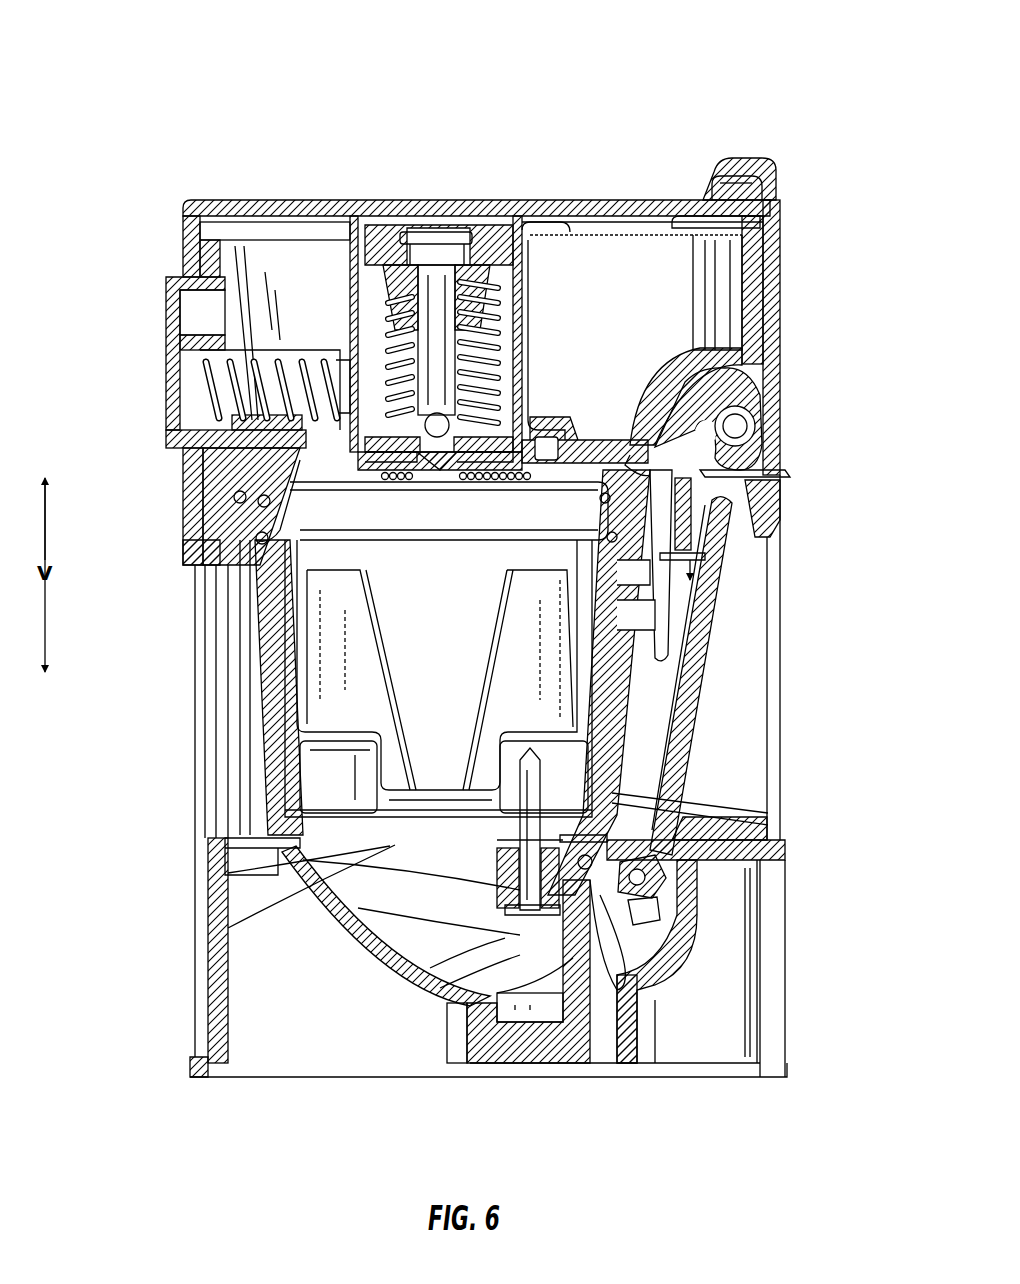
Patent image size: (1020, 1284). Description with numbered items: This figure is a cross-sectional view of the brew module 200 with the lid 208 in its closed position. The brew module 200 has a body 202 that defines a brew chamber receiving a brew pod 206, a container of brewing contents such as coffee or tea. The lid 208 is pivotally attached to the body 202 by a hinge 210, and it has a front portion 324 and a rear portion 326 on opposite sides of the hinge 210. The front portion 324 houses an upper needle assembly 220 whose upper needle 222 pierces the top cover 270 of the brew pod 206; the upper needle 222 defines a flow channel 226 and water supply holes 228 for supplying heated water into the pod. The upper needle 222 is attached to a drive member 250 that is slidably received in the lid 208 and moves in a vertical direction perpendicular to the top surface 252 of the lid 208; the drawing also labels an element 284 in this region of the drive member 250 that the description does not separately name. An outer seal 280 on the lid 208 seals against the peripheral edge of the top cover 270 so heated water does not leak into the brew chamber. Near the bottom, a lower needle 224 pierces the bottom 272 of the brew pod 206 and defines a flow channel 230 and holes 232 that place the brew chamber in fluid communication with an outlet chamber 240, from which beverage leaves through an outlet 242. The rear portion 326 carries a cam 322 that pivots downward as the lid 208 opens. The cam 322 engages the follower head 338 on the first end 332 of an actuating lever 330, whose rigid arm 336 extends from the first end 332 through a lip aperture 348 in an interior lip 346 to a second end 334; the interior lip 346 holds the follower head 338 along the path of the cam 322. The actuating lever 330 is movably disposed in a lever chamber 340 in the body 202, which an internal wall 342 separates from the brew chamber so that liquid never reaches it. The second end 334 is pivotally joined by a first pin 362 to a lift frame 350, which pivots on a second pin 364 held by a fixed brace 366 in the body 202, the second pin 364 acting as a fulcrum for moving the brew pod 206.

The brew module 200 is at (792, 100).
The body 202 is at (218, 998).
The brew pod 206 is at (454, 622).
The lid 208 is at (192, 212).
The hinge 210 is at (737, 428).
The upper needle assembly 220 is at (588, 305).
The upper needle 222 is at (558, 305).
The lower needle 224 is at (395, 866).
The flow channel 226 is at (439, 280).
The water supply holes 228 is at (528, 392).
The flow channel 230 is at (532, 900).
The holes 232 is at (518, 812).
The outlet chamber 240 is at (433, 957).
The outlet 242 is at (500, 1080).
The drive member 250 is at (352, 262).
The top surface 252 is at (258, 198).
The top cover 270 is at (280, 470).
The bottom 272 is at (295, 856).
The outer seal 280 is at (335, 462).
The valve head 284 is at (425, 205).
The cam 322 is at (762, 487).
The front portion 324 is at (298, 282).
The rear portion 326 is at (770, 380).
The actuating lever 330 is at (690, 726).
The first end 332 is at (756, 465).
The second end 334 is at (653, 993).
The rigid arm 336 is at (690, 745).
The follower head 338 is at (748, 500).
The lever chamber 340 is at (745, 786).
The internal wall 342 is at (610, 716).
The interior lip 346 is at (770, 537).
The lip aperture 348 is at (700, 575).
The lift frame 350 is at (652, 912).
The first pin 362 is at (640, 878).
The second pin 364 is at (593, 858).
The fixed brace 366 is at (198, 925).